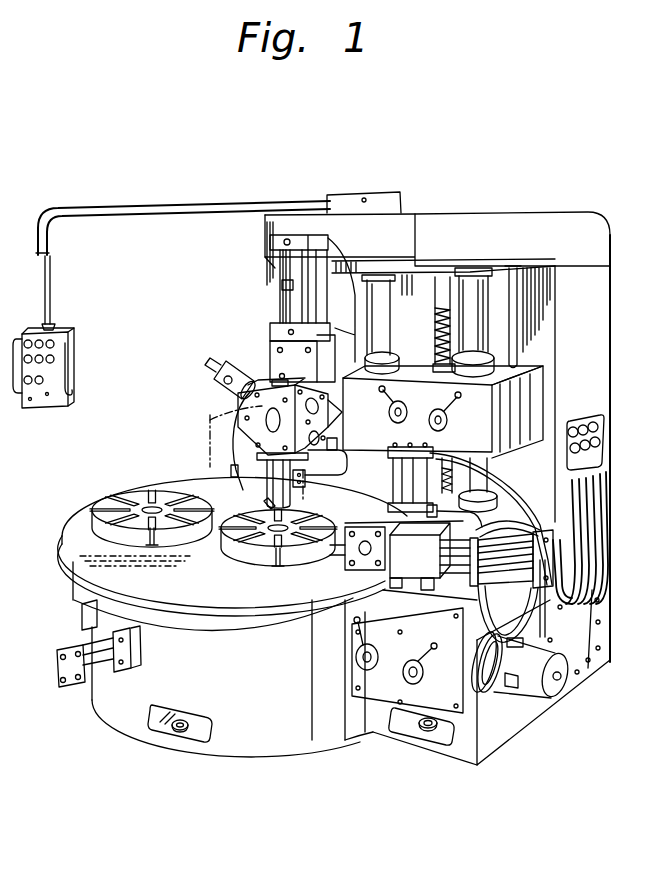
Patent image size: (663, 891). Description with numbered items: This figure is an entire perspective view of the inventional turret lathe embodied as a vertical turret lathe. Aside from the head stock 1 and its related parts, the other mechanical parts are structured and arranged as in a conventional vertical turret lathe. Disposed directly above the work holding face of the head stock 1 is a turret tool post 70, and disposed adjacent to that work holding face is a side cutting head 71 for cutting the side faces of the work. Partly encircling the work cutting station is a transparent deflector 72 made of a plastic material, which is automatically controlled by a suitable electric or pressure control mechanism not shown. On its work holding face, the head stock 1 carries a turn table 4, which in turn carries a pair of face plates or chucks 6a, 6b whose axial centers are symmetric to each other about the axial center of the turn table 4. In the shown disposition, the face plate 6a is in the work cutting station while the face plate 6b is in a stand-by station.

The head stock 1 is at (128, 714).
The turn table 4 is at (80, 545).
The face plate 6a is at (275, 568).
The face plate 6b is at (140, 500).
The turret tool post 70 is at (248, 410).
The side cutting head 71 is at (413, 552).
The transparent deflector 72 is at (215, 462).